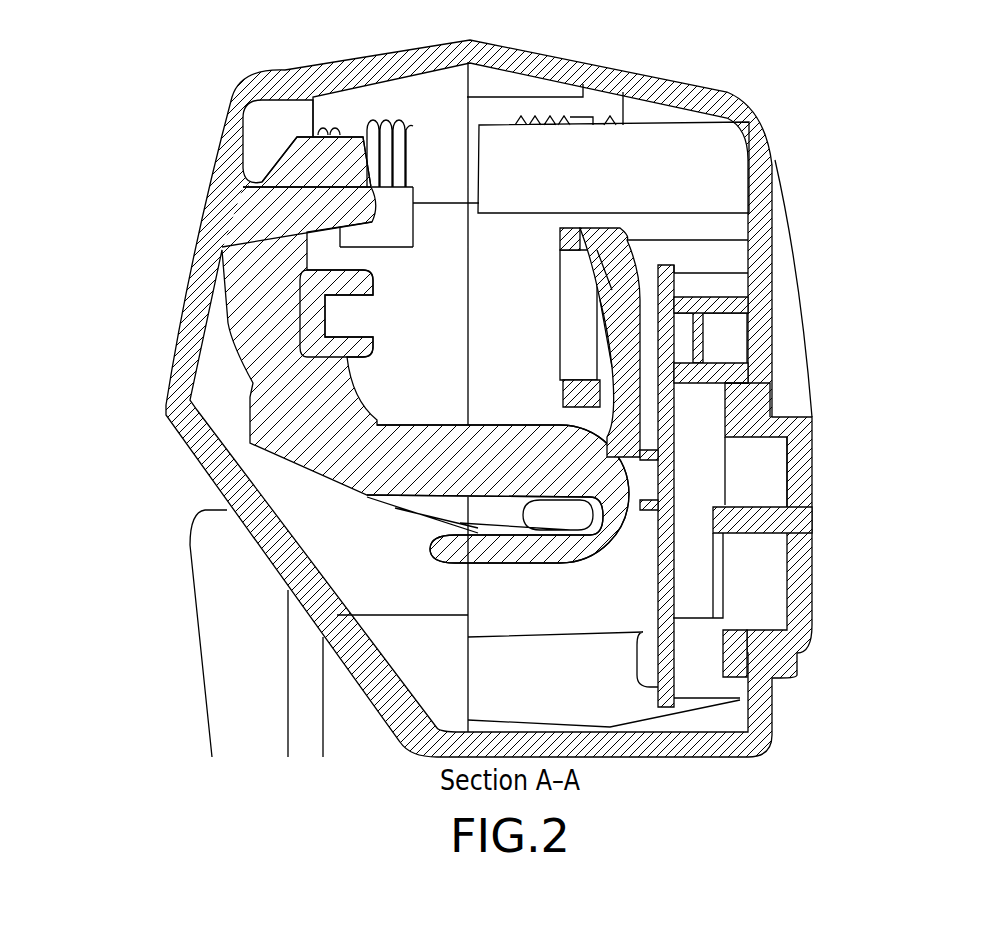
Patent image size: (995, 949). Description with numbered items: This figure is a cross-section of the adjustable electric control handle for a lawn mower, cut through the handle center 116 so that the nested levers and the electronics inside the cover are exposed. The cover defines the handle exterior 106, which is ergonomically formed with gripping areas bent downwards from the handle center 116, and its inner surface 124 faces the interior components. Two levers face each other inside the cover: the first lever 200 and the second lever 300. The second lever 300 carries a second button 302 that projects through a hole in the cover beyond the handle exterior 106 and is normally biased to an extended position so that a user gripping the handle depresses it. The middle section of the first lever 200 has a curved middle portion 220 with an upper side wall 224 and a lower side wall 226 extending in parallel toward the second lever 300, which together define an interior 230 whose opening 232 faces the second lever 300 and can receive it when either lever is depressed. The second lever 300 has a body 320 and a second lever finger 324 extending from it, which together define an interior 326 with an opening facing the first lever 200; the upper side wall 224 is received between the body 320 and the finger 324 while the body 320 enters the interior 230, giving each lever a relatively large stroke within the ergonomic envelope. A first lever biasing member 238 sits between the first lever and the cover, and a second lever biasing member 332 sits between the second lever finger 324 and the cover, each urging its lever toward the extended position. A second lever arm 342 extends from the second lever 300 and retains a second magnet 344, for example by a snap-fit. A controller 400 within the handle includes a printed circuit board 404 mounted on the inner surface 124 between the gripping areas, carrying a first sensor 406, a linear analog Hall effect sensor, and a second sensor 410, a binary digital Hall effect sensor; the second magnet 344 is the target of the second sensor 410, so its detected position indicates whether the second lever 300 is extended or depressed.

The handle center 116 is at (507, 398).
The inner surface 124 is at (315, 104).
The second lever finger 324 is at (334, 150).
The second lever biasing member 332 is at (384, 135).
The interior 326 is at (323, 258).
The body 320 is at (337, 315).
The second lever 300 is at (287, 393).
The second lever arm 342 is at (427, 463).
The second magnet 344 is at (550, 517).
The second button 302 is at (238, 643).
The handle exterior 106 is at (287, 723).
The first lever biasing member 238 is at (585, 95).
The opening 232 is at (567, 235).
The upper side wall 224 is at (593, 233).
The interior 230 is at (577, 287).
The curved middle portion 220 is at (617, 316).
The lower side wall 226 is at (583, 393).
The first lever 200 is at (668, 350).
The printed circuit board 404 is at (607, 420).
The first sensor 406 is at (650, 457).
The controller 400 is at (703, 477).
The second sensor 410 is at (650, 510).